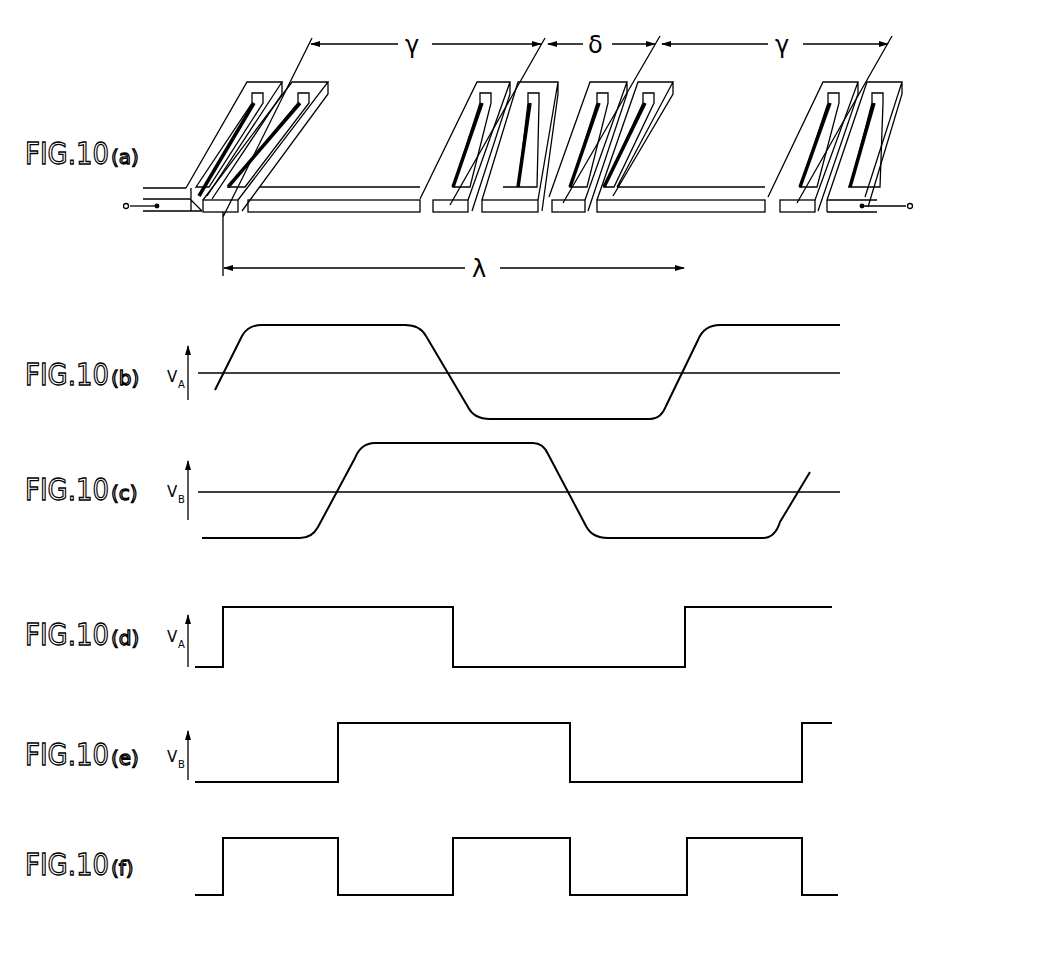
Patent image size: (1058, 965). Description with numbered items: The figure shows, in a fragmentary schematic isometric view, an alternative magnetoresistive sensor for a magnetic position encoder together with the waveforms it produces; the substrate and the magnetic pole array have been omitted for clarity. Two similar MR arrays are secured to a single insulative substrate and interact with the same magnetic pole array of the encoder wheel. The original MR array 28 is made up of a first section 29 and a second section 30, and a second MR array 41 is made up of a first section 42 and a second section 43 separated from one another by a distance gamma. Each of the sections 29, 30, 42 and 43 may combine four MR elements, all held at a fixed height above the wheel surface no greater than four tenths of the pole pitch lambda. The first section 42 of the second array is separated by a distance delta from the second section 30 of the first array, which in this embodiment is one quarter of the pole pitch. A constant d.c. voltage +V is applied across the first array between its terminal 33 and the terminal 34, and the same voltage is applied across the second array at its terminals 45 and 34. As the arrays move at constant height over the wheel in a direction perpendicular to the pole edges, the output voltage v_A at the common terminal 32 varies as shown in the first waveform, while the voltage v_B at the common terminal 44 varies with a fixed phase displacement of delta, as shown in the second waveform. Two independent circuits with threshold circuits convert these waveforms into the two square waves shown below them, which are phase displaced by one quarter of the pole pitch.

The MR array 28 is at (437, 146).
The first section 29 is at (230, 214).
The second section 30 is at (452, 221).
The common terminal 32 is at (336, 205).
The terminal 33 is at (200, 160).
The terminal 34 is at (510, 205).
The second MR array 41 is at (790, 141).
The first section 42 is at (569, 214).
The second section 43 is at (799, 214).
The common terminal 44 is at (685, 205).
The terminal 45 is at (873, 160).